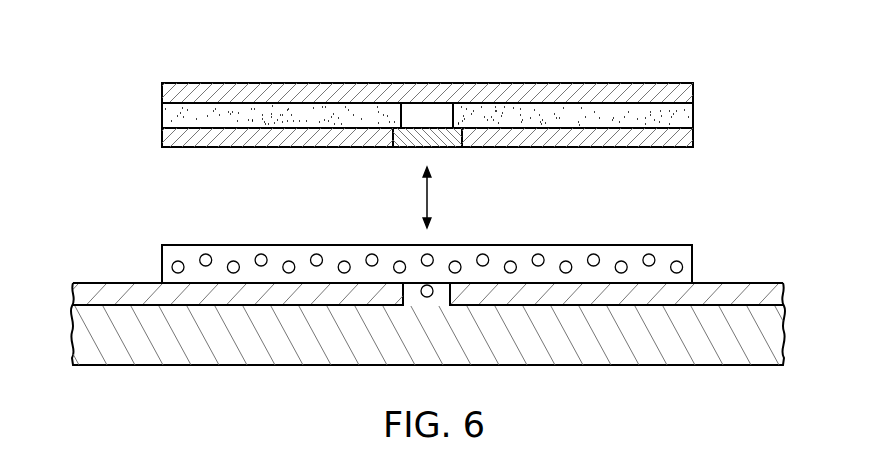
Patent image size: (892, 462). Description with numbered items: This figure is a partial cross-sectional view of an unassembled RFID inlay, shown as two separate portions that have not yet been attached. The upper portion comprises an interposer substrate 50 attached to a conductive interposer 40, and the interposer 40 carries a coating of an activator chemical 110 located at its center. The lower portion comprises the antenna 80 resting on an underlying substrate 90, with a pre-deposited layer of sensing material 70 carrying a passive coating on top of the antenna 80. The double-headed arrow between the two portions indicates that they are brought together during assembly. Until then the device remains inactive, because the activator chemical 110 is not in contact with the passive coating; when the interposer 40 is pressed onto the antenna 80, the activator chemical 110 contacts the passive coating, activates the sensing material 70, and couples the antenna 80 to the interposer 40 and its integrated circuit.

The interposer substrate 50 is at (162, 92).
The interposer 40 is at (162, 113).
The activator chemical 110 is at (162, 137).
The sensing material 70 is at (692, 258).
The antenna 80 is at (73, 290).
The substrate 90 is at (73, 338).